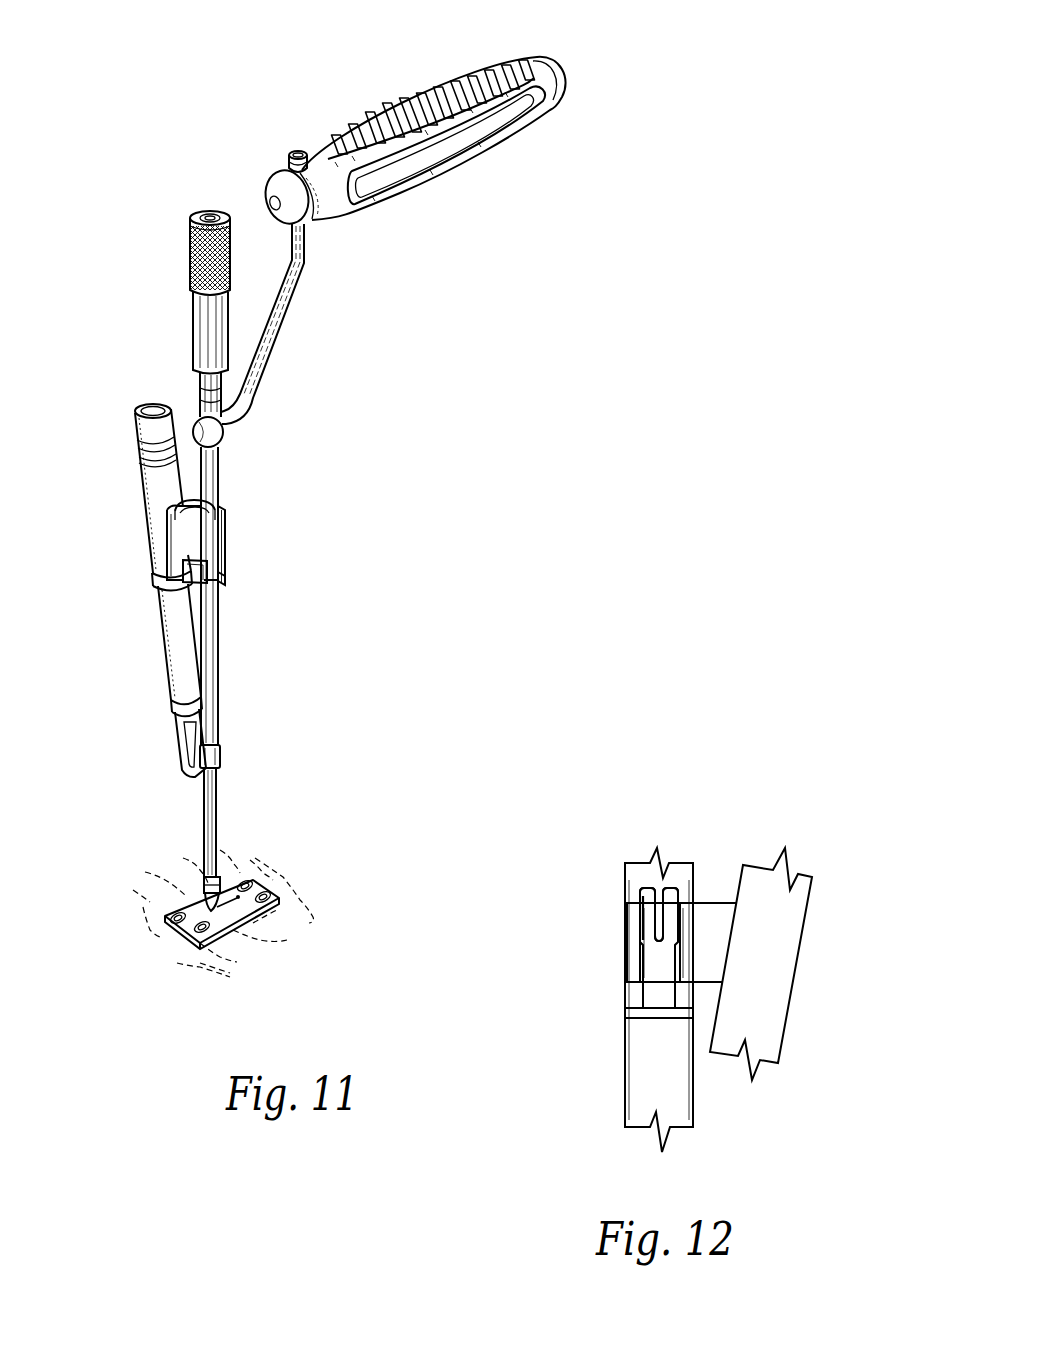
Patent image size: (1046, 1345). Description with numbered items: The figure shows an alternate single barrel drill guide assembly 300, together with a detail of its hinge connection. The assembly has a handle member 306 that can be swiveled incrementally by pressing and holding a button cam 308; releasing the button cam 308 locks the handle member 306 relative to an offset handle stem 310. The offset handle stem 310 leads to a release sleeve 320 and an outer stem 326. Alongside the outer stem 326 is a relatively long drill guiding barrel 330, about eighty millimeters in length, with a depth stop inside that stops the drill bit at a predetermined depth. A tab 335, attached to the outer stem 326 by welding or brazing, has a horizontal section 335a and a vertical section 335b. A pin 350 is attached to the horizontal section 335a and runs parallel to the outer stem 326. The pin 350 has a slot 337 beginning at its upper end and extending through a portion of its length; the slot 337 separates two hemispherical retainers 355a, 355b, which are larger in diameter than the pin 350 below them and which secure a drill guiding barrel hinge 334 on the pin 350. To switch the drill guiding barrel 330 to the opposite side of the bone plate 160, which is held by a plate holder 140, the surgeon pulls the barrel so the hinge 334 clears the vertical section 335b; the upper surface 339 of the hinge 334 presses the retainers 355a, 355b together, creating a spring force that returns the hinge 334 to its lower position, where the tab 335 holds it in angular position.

In FIG. 11, the drill guide assembly 300 is at (92, 352).
In FIG. 11, the handle member 306 is at (444, 70).
In FIG. 11, the button cam 308 is at (285, 150).
In FIG. 11, the offset handle stem 310 is at (296, 336).
In FIG. 11, the release sleeve 320 is at (184, 258).
In FIG. 11, the outer stem 326 is at (225, 477).
In FIG. 12, the outer stem 326 is at (620, 1069).
In FIG. 11, the drill guiding barrel 330 is at (135, 468).
In FIG. 12, the drill guiding barrel 330 is at (804, 966).
In FIG. 11, the drill guiding barrel hinge 334 is at (172, 540).
In FIG. 12, the drill guiding barrel hinge 334 is at (714, 903).
In FIG. 11, the tab 335 is at (233, 582).
In FIG. 11, the horizontal section 335a is at (224, 574).
In FIG. 12, the horizontal section 335a is at (620, 1013).
In FIG. 11, the vertical section 335b is at (205, 588).
In FIG. 12, the slot 337 is at (658, 886).
In FIG. 12, the upper surface 339 is at (633, 899).
In FIG. 11, the pin 350 is at (194, 507).
In FIG. 12, the pin 350 is at (637, 962).
In FIG. 12, the hemispherical retainer 355a is at (670, 885).
In FIG. 12, the hemispherical retainer 355b is at (646, 885).
In FIG. 11, the plate holder 140 is at (195, 800).
In FIG. 11, the bone plate 160 is at (180, 904).